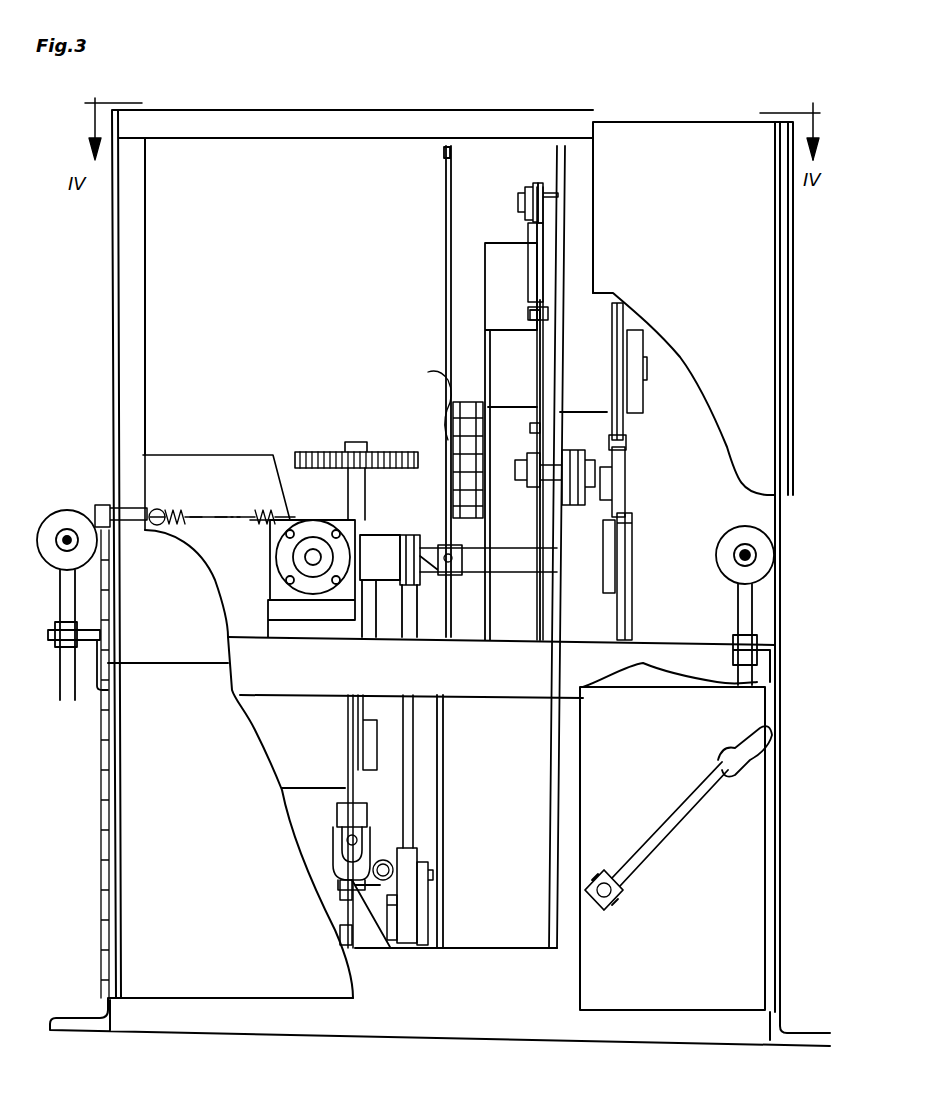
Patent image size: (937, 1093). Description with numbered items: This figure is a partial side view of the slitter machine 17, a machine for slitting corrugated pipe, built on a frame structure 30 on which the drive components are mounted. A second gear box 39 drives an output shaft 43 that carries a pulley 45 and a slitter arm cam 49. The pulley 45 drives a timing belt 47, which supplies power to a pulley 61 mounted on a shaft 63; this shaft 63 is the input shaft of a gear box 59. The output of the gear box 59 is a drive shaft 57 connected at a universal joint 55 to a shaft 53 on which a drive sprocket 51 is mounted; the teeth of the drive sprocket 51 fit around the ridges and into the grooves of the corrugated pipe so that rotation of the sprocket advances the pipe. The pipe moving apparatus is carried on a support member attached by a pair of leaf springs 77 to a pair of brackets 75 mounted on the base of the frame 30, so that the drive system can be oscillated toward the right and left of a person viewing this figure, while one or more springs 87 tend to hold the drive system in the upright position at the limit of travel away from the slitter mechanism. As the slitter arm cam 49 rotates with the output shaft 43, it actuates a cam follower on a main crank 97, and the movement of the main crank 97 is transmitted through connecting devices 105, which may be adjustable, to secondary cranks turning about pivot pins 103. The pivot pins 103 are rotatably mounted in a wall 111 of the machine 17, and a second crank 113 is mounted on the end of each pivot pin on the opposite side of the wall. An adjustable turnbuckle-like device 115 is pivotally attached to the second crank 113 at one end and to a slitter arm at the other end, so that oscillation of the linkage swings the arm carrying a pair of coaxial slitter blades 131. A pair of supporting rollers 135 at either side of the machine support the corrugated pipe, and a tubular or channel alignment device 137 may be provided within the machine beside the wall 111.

The slitter machine 17 is at (418, 110).
The frame structure 30 is at (465, 677).
The second gear box 39 is at (280, 563).
The output shaft 43 is at (503, 560).
The pulley 45 is at (416, 535).
The timing belt 47 is at (410, 802).
The slitter arm cam 49 is at (632, 618).
The drive sprocket 51 is at (306, 450).
The shaft 53 is at (347, 490).
The universal joint 55 is at (340, 806).
The drive shaft 57 is at (340, 863).
The gear box 59 is at (378, 898).
The pulley 61 is at (417, 905).
The shaft 63 is at (400, 870).
The bracket 75 is at (355, 906).
The leaf spring 77 is at (347, 728).
The spring 87 is at (165, 512).
The main crank 97 is at (595, 490).
The pivot pin 103 is at (518, 205).
The connecting device 105 is at (620, 428).
The wall 111 is at (565, 252).
The second crank 113 is at (545, 198).
The adjustable turnbuckle-like device 115 is at (535, 277).
The slitter blade 131 is at (455, 415).
The supporting roller 135 is at (60, 512).
The alignment device 137 is at (230, 468).